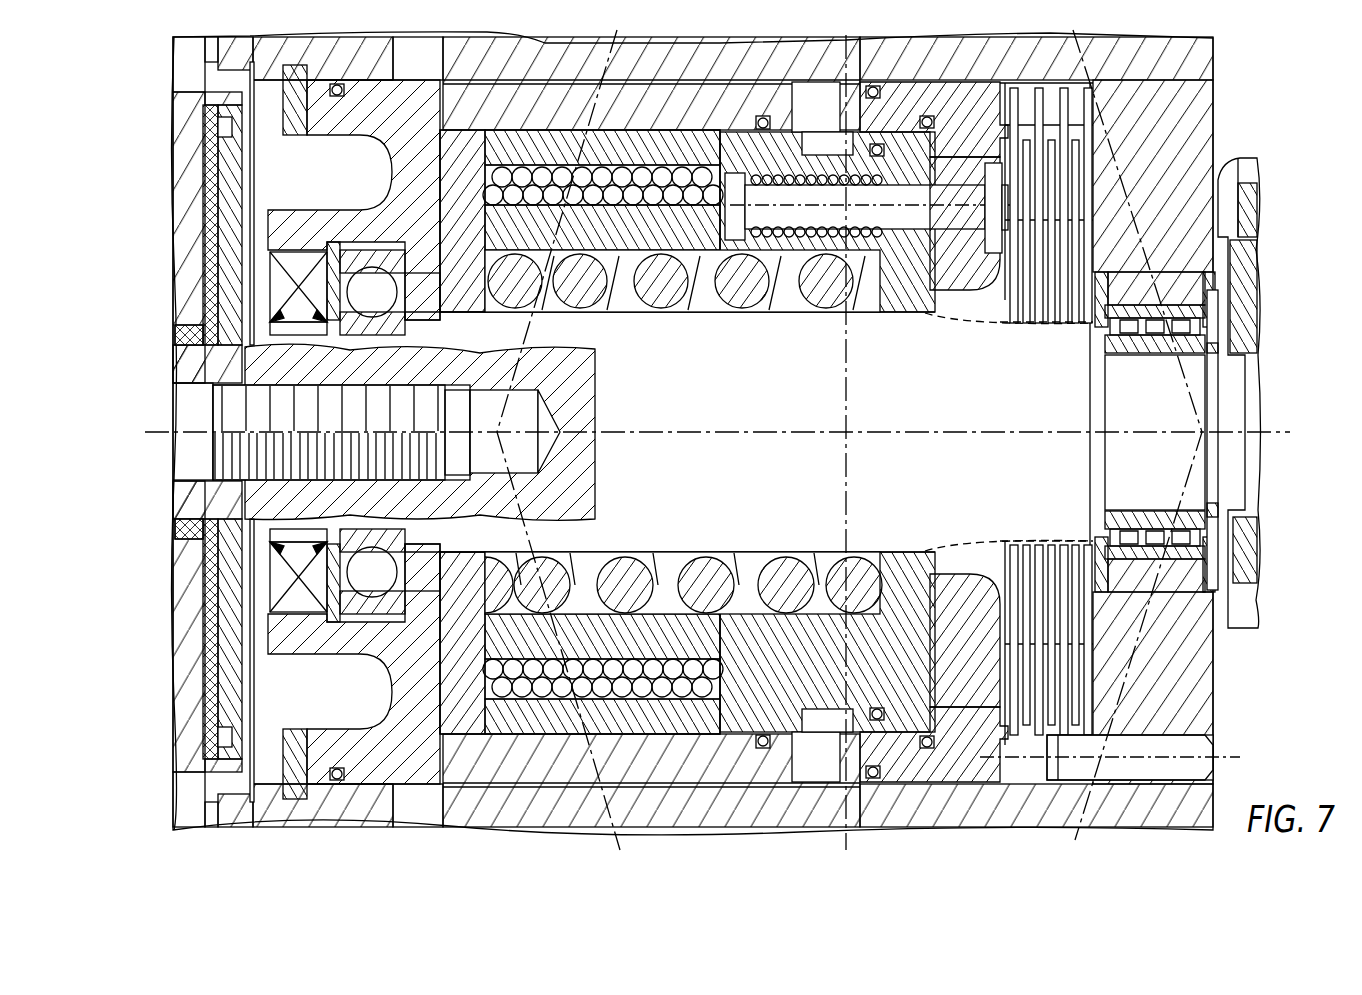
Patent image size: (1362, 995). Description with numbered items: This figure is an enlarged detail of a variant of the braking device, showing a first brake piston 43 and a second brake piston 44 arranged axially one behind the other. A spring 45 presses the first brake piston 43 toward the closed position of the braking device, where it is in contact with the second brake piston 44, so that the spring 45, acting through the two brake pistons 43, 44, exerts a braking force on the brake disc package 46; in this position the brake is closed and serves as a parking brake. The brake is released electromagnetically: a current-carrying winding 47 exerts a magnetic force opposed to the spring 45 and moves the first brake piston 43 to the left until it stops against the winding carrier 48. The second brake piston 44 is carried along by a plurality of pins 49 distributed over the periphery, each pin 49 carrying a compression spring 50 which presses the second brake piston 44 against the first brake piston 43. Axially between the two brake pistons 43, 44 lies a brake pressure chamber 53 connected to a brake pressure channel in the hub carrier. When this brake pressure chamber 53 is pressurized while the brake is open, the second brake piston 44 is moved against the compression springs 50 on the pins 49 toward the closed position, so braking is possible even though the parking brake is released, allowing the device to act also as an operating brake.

The first brake piston 43 is at (897, 292).
The second brake piston 44 is at (978, 268).
The spring 45 is at (732, 313).
The brake disc package 46 is at (1038, 282).
The current-carrying winding 47 is at (625, 197).
The winding carrier 48 is at (690, 232).
The pin 49 is at (948, 215).
The compression spring 50 is at (790, 232).
The brake pressure chamber 53 is at (830, 140).